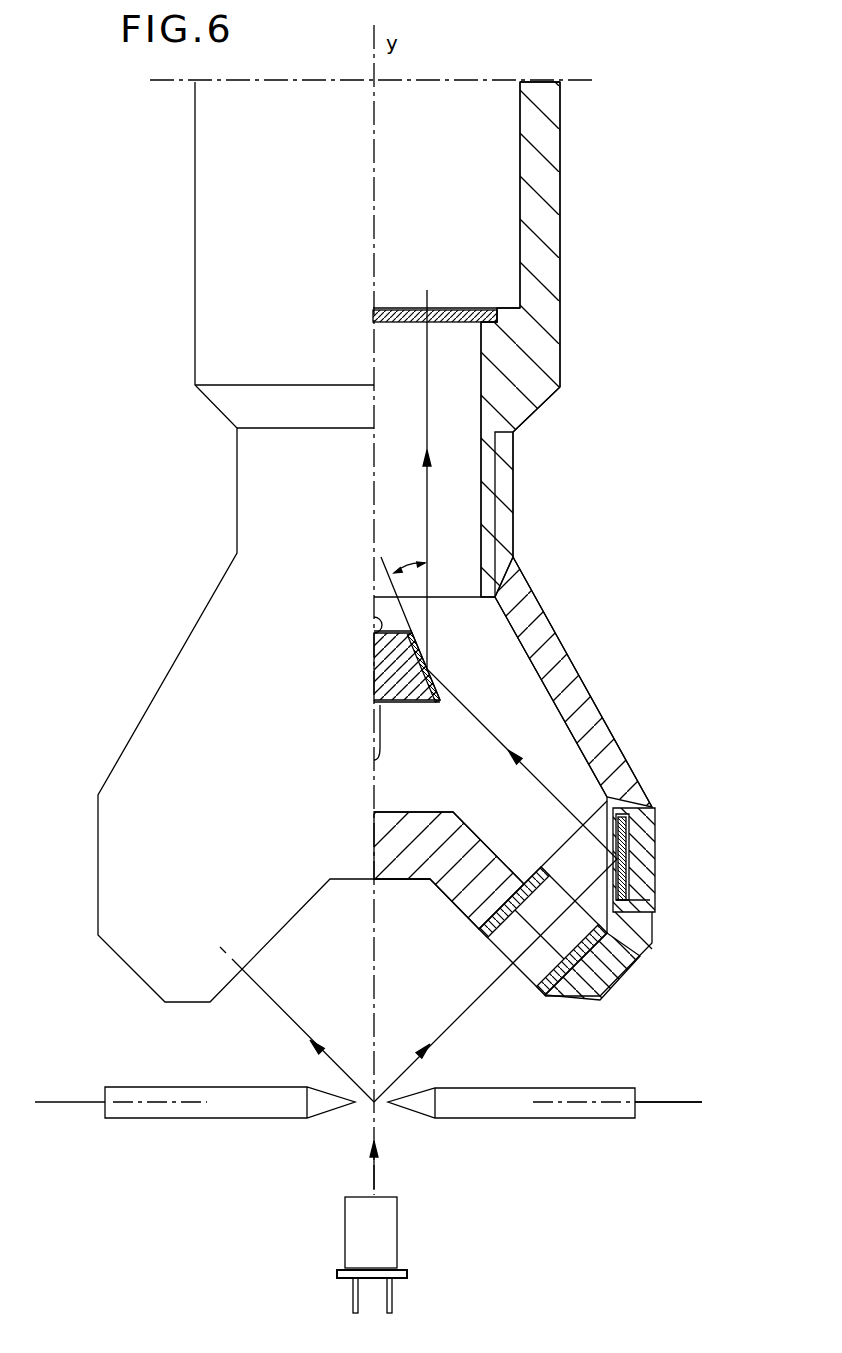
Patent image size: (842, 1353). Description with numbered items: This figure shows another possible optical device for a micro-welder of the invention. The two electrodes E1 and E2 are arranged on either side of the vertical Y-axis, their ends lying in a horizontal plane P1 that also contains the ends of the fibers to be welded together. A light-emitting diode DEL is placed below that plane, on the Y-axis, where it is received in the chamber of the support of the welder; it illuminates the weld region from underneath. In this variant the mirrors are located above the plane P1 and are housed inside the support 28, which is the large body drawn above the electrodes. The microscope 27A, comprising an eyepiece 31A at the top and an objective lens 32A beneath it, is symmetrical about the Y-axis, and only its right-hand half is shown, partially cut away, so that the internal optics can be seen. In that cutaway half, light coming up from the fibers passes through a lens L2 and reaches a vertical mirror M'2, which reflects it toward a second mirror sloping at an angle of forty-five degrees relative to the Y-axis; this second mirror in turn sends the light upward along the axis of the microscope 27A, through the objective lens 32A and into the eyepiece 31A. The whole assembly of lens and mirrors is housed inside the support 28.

The support 28 is at (127, 886).
The microscope 27A is at (585, 308).
The eyepiece 31A is at (495, 207).
The objective lens 32A is at (453, 417).
The vertical mirror M'2 is at (584, 860).
The lens L2 is at (517, 973).
The electrode E1 is at (185, 1120).
The electrode E2 is at (550, 1120).
The horizontal plane P1 is at (687, 1102).
The light-emitting diode DEL is at (387, 1227).